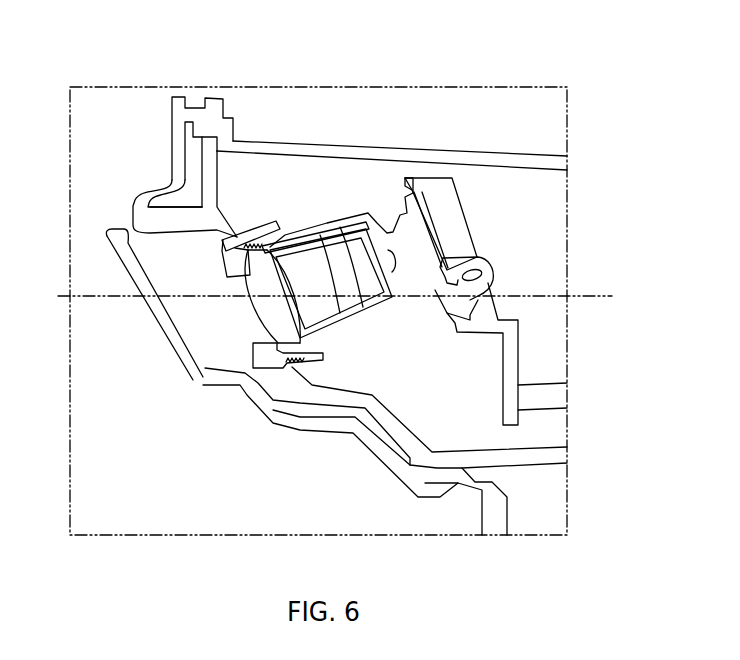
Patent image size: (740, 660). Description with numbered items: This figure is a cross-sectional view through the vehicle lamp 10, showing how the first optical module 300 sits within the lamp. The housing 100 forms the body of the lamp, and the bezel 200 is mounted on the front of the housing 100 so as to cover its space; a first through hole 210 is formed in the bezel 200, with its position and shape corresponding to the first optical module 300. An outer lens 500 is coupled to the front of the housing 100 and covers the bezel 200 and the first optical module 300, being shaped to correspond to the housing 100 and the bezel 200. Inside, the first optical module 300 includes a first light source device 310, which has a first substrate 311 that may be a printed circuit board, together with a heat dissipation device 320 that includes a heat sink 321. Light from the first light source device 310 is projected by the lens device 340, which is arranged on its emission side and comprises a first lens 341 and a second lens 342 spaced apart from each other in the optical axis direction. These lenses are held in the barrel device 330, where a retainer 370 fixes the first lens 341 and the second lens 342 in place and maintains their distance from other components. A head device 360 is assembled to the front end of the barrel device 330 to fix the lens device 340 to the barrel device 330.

The vehicle lamp 10 is at (602, 92).
The housing 100 is at (528, 151).
The bezel 200 is at (158, 220).
The first through hole 210 is at (215, 237).
The outer lens 500 is at (157, 318).
The first optical module 300 is at (620, 370).
The first light source device 310 is at (617, 288).
The first substrate 311 is at (437, 257).
The heat dissipation device 320 is at (608, 203).
The heat sink 321 is at (457, 230).
The barrel device 330 is at (347, 225).
The lens device 340 is at (125, 398).
The first lens 341 is at (358, 285).
The second lens 342 is at (272, 310).
The head device 360 is at (252, 237).
The retainer 370 is at (285, 250).